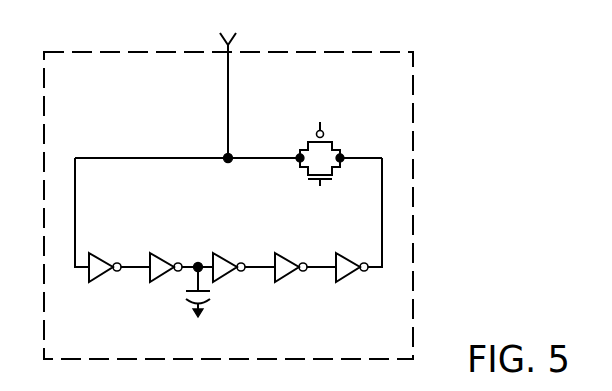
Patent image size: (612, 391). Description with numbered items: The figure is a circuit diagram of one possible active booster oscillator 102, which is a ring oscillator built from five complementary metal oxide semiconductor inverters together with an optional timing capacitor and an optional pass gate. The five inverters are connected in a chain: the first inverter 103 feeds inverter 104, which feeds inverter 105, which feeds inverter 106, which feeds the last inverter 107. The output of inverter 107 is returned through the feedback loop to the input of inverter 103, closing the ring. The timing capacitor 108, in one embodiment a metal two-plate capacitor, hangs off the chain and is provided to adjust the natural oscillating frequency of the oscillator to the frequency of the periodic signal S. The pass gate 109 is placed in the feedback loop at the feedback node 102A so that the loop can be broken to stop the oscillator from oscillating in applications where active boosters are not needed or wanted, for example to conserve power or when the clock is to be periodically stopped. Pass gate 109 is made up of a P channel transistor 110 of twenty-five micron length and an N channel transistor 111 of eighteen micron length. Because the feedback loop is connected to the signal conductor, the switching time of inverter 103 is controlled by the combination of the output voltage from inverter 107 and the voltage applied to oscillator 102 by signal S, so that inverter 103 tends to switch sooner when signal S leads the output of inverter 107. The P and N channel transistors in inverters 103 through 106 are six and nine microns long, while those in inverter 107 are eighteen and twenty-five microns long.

The active booster oscillator 102 is at (383, 52).
The feedback node 102A is at (252, 157).
The first inverter 103 is at (93, 253).
The inverter 104 is at (154, 253).
The inverter 105 is at (215, 253).
The inverter 106 is at (277, 253).
The last inverter 107 is at (340, 253).
The timing capacitor 108 is at (214, 297).
The pass gate 109 is at (338, 137).
The P channel transistor 110 is at (333, 142).
The N channel transistor 111 is at (333, 176).